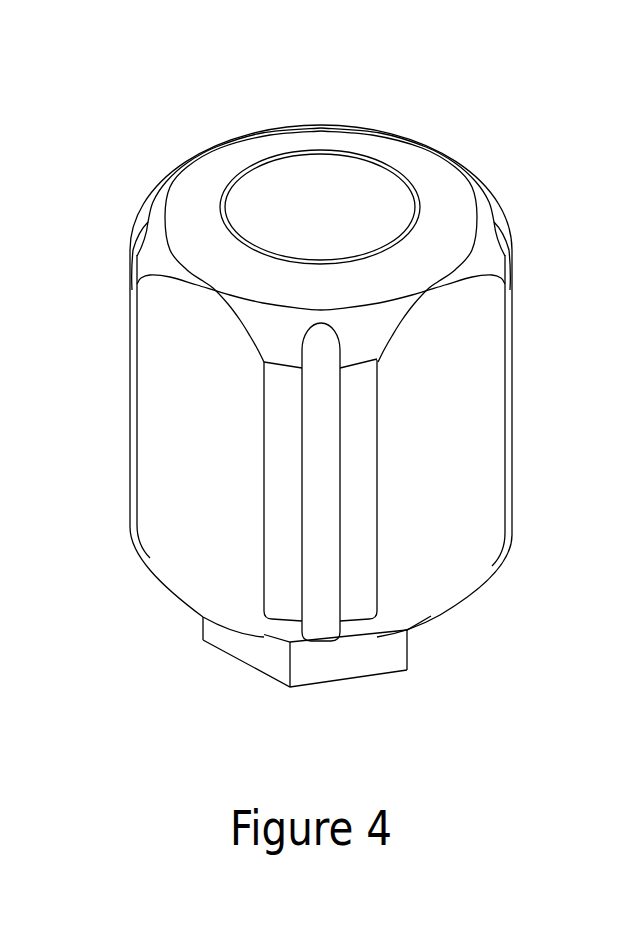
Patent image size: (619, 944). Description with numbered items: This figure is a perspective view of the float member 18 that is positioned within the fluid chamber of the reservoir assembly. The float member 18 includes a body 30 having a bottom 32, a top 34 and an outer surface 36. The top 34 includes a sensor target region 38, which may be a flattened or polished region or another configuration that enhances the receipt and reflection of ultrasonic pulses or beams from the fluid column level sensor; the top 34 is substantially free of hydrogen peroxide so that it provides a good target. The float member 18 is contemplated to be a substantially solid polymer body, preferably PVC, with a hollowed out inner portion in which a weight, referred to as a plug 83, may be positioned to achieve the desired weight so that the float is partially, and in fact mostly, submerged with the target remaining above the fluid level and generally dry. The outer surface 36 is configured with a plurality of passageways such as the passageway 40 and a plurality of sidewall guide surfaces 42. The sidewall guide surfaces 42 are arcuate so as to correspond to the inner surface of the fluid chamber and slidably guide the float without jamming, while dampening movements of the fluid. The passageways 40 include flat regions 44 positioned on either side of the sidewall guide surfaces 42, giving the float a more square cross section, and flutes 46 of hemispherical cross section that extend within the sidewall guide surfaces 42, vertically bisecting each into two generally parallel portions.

The float member 18 is at (512, 388).
The body 30 is at (500, 194).
The bottom 32 is at (473, 617).
The top 34 is at (460, 141).
The outer surface 36 is at (150, 200).
The sensor target region 38 is at (328, 186).
The passageway 40 is at (168, 500).
The sidewall guide surface 42 is at (280, 525).
The flat region 44 is at (160, 417).
The flute 46 is at (300, 600).
The plug 83 is at (337, 677).